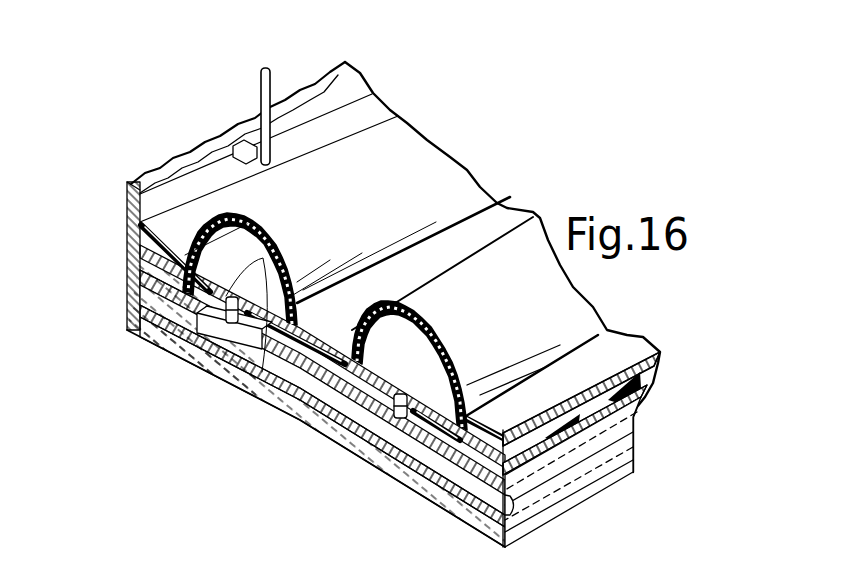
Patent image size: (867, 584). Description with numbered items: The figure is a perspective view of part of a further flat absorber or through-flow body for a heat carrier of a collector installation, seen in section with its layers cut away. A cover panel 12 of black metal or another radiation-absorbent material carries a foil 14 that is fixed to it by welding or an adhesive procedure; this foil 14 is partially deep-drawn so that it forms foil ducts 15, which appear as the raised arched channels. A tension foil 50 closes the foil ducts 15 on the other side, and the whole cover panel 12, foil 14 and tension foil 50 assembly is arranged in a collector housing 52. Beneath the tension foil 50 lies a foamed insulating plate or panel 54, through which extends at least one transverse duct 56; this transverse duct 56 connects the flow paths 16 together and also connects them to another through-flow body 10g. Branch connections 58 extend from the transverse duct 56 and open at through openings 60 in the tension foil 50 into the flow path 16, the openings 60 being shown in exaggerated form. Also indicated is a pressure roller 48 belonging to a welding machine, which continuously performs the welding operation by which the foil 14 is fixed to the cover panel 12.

The through-flow body 10g is at (388, 158).
The cover panel 12 is at (630, 340).
The foil 14 is at (298, 377).
The foil ducts 15 is at (503, 253).
The flow paths 16 is at (445, 362).
The pressure roller 48 is at (233, 150).
The tension foil 50 is at (527, 473).
The collector housing 52 is at (160, 345).
The insulating panel 54 is at (612, 440).
The transverse duct 56 is at (440, 472).
The branch connections 58 is at (357, 460).
The through openings 60 is at (270, 262).